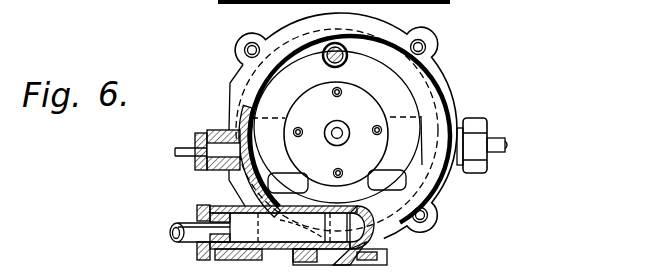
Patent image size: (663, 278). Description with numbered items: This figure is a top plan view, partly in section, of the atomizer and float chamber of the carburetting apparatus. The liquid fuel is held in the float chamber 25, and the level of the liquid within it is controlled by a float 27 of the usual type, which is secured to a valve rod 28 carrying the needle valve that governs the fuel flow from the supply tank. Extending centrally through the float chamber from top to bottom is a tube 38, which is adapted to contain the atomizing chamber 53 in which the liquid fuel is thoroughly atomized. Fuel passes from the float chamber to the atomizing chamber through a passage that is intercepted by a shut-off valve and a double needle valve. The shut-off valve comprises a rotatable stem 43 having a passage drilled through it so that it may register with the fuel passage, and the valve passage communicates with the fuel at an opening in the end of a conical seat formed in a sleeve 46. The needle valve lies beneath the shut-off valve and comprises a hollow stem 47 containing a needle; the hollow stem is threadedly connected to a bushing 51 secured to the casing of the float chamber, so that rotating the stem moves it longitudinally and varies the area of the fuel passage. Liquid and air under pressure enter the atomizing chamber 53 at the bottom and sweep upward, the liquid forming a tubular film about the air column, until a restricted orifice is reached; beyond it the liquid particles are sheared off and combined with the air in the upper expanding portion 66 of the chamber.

The float chamber 25 is at (242, 79).
The float 27 is at (398, 93).
The valve rod 28 is at (344, 52).
The tube 38 is at (320, 101).
The rotatable stem 43 is at (222, 128).
The sleeve 46 is at (237, 116).
The hollow stem 47 is at (502, 150).
The bushing 51 is at (456, 168).
The atomizing chamber 53 is at (338, 131).
The upper expanding portion 66 is at (339, 138).